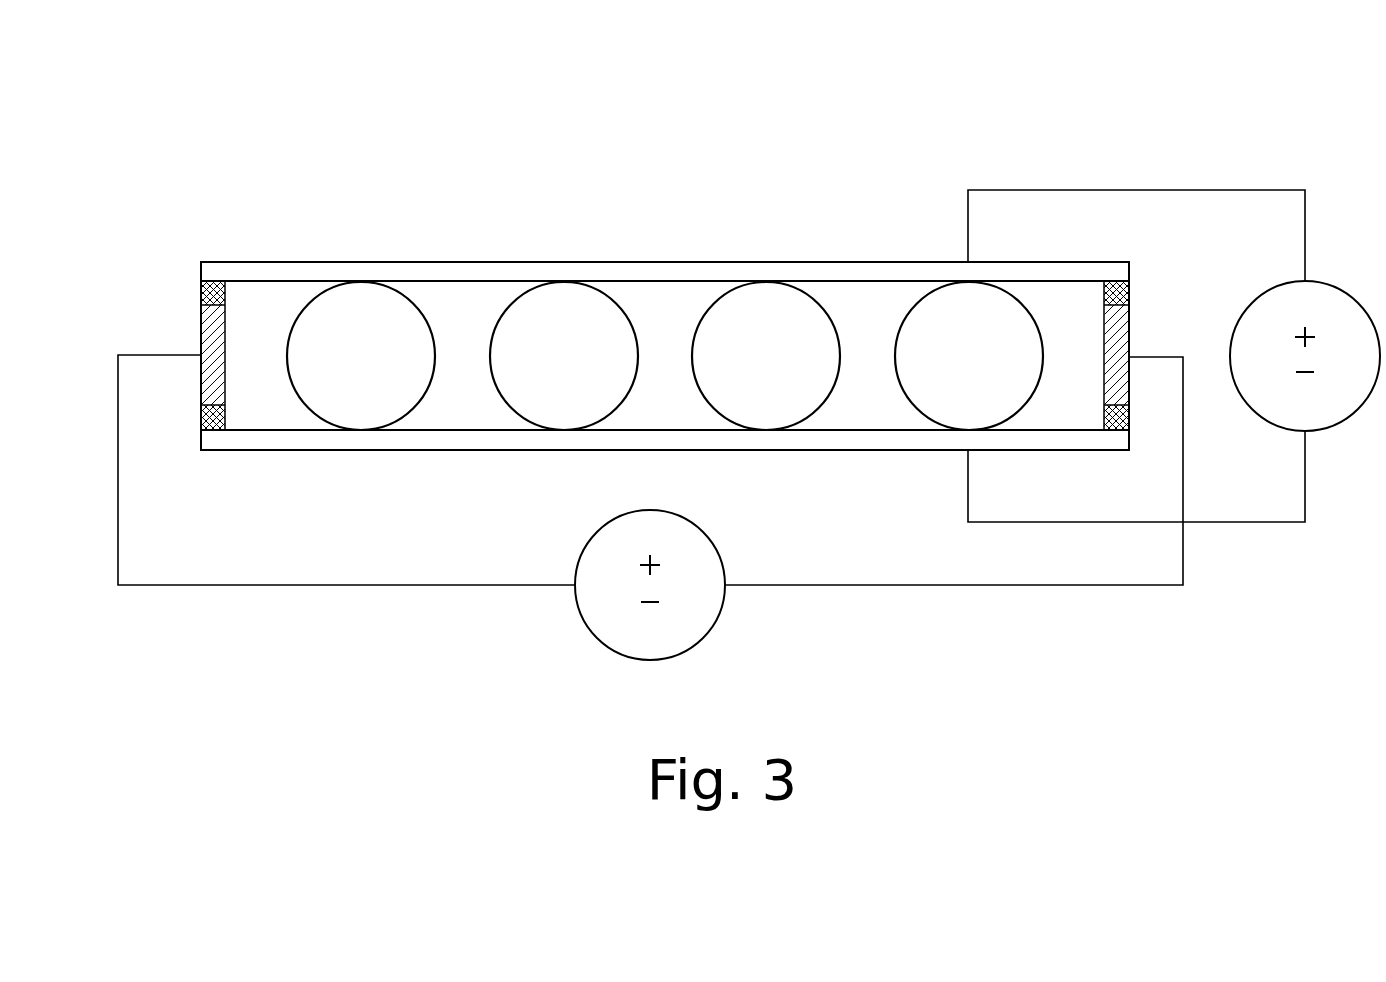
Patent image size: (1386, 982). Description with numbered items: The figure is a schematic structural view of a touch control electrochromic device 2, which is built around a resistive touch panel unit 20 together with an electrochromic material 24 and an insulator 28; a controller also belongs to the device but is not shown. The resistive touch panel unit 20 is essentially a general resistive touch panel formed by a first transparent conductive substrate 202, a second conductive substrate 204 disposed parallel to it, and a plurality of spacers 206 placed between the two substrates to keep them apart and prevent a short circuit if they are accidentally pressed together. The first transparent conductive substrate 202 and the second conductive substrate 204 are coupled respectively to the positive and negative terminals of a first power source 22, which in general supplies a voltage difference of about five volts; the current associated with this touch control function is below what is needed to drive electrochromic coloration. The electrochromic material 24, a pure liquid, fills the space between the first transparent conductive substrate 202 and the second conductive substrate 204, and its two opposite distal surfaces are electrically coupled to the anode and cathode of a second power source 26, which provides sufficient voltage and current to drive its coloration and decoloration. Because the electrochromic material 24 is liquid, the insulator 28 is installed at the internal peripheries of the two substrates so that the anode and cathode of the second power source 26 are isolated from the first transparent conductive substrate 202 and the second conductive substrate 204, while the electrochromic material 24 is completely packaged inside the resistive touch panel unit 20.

The touch control electrochromic device 2 is at (148, 98).
The resistive touch panel unit 20 is at (417, 168).
The first transparent conductive substrate 202 is at (608, 275).
The second conductive substrate 204 is at (453, 440).
The spacers 206 is at (762, 300).
The electrochromic material 24 is at (263, 298).
The insulator 28 is at (201, 298).
The first power source 22 is at (1352, 296).
The second power source 26 is at (687, 632).